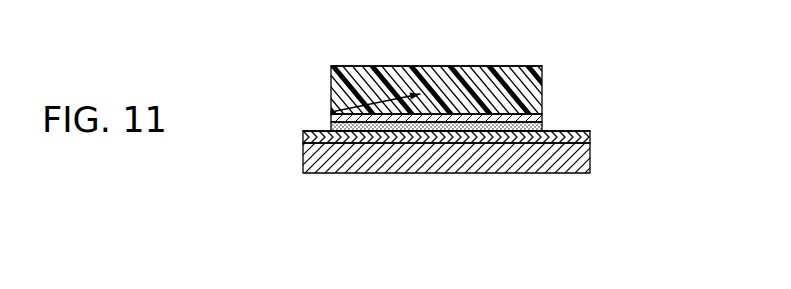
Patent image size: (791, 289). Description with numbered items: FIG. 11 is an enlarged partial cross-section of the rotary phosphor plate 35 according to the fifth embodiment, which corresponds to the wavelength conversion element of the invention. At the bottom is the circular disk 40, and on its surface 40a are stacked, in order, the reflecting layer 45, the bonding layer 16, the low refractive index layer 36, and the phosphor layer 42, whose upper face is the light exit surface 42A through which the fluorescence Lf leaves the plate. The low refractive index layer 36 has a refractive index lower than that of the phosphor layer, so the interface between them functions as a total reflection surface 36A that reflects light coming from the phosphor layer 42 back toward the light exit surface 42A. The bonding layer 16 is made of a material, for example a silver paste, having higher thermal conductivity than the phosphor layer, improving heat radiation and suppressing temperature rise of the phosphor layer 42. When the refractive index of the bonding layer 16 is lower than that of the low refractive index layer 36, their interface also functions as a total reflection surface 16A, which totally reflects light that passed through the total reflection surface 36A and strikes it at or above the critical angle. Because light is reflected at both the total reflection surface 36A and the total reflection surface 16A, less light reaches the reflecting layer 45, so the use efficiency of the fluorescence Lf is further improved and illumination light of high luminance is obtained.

The rotary phosphor plate 35 is at (562, 31).
The phosphor layer 42 is at (544, 80).
The light exit surface 42A is at (345, 66).
The fluorescent light Lf is at (375, 97).
The low refractive index layer 36 is at (544, 117).
The total reflection surface 36A is at (487, 115).
The bonding layer 16 is at (544, 125).
The total reflection surface 16A is at (331, 112).
The reflecting layer 45 is at (590, 132).
The surface of the circular disk 40a is at (305, 133).
The circular disk 40 is at (365, 162).